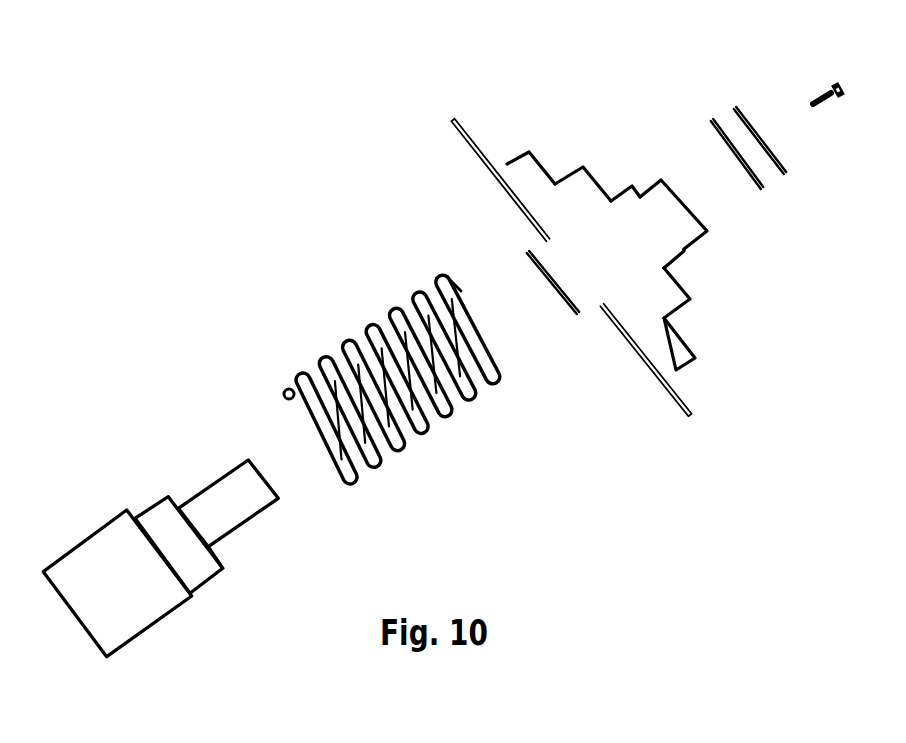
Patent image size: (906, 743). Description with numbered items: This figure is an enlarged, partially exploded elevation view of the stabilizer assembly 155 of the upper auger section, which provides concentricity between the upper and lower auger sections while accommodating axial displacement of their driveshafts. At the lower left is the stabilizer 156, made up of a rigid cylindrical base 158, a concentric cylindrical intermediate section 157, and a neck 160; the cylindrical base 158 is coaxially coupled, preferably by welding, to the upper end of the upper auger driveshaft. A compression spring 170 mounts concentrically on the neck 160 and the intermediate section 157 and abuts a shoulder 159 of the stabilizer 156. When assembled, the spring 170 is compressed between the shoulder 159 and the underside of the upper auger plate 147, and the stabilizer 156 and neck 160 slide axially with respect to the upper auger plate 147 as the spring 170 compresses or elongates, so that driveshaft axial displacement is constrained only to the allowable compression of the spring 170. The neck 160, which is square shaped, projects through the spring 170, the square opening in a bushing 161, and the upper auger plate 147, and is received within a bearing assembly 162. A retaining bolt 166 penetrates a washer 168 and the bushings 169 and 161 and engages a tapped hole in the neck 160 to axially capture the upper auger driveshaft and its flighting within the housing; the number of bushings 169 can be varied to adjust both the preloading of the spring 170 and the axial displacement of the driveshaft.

The upper auger plate 147 is at (677, 398).
The stabilizer assembly 155 is at (378, 209).
The stabilizer 156 is at (78, 438).
The intermediate section 157 is at (147, 503).
The cylindrical base 158 is at (155, 618).
The shoulder 159 is at (224, 549).
The neck 160 is at (251, 516).
The bushing 161 is at (578, 316).
The bearing assembly 162 is at (628, 174).
The retaining bolt 166 is at (820, 84).
The washer 168 is at (743, 108).
The bushings 169 is at (755, 184).
The compression spring 170 is at (423, 428).